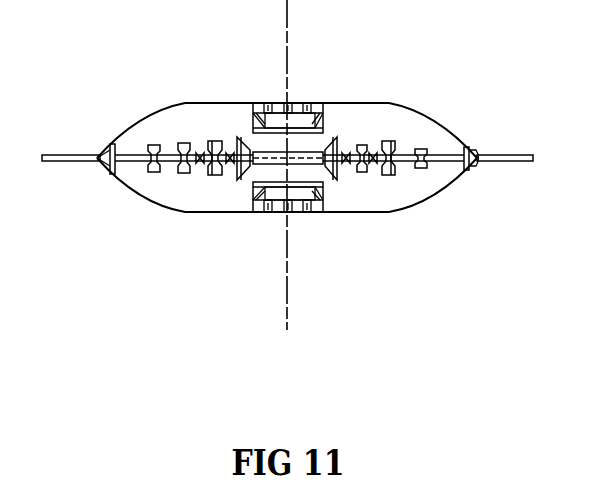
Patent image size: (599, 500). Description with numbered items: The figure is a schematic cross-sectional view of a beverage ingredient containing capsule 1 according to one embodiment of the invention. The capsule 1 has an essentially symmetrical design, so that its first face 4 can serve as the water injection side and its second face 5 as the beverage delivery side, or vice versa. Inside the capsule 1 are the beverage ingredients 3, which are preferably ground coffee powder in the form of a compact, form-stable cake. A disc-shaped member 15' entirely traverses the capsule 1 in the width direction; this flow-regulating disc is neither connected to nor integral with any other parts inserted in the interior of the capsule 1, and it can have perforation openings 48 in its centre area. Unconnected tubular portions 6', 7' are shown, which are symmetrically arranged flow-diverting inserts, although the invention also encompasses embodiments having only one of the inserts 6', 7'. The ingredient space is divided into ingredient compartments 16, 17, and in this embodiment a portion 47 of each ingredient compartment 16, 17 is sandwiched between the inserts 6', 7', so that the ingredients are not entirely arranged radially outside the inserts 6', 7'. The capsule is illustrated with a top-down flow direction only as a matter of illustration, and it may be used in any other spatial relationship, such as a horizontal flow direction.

The capsule 1 is at (445, 113).
The beverage ingredients 3 is at (210, 101).
The first face 4 is at (402, 101).
The second face 5 is at (391, 213).
The tubular portion 6' is at (310, 99).
The tubular portion 7' is at (297, 219).
The disc-shaped member 15' is at (447, 197).
The ingredient compartment 16 is at (140, 101).
The ingredient compartment 17 is at (167, 193).
The portion of ingredient compartment 47 is at (273, 173).
The perforation openings 48 is at (262, 152).